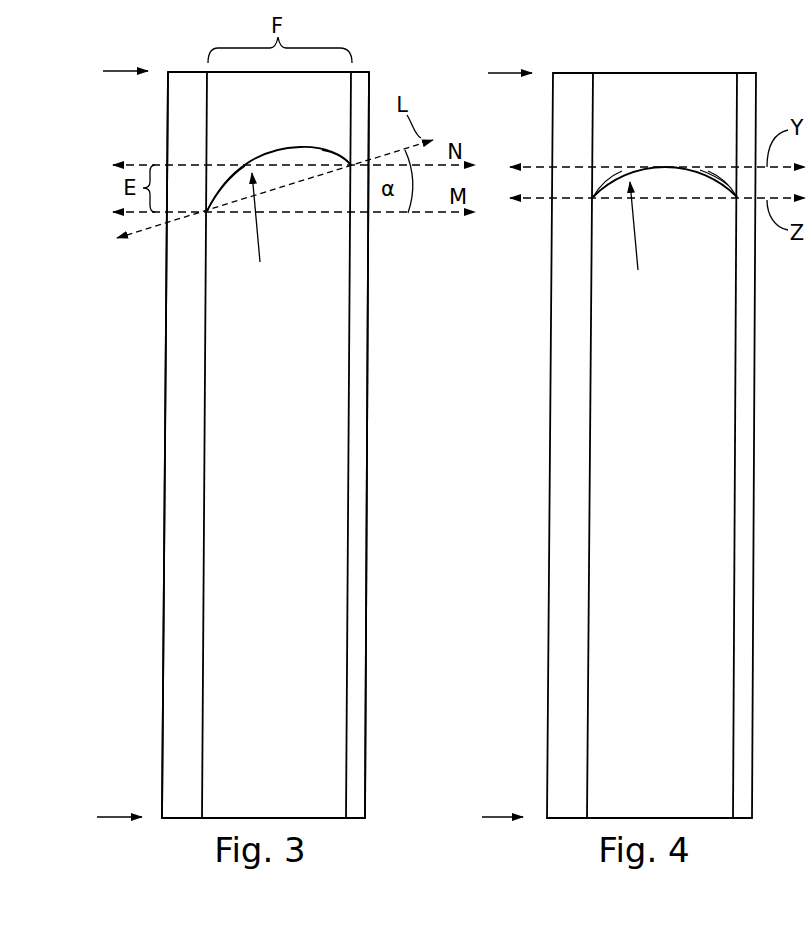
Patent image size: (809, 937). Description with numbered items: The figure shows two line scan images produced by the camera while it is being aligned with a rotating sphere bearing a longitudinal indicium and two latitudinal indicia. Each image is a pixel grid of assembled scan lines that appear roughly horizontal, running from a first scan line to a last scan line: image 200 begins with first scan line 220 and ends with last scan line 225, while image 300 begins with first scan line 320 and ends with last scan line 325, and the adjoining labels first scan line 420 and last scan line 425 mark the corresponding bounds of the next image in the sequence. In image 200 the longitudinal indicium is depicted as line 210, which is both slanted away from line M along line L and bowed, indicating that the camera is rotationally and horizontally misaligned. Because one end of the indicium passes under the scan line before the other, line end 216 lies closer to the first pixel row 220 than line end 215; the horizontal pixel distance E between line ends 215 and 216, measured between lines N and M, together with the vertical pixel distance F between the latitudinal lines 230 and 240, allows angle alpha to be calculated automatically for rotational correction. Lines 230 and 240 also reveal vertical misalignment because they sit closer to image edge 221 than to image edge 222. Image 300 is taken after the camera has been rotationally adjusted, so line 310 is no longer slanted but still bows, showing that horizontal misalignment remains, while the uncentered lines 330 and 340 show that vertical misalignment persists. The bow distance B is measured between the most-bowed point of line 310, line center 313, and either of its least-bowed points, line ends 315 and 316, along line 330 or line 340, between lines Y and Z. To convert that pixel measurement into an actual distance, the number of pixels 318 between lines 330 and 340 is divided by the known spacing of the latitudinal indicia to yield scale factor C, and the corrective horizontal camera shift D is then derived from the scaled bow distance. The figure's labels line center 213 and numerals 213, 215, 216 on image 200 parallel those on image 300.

In FIG. 3, the image 200 is at (246, 527).
In FIG. 3, the line representation of indicium 210 is at (260, 262).
In FIG. 3, the line center 213 is at (283, 152).
In FIG. 3, the line end 215 is at (207, 211).
In FIG. 3, the line end 216 is at (350, 167).
In FIG. 3, the first scan line 220 is at (98, 72).
In FIG. 3, the image edge 221 is at (366, 474).
In FIG. 3, the image edge 222 is at (165, 520).
In FIG. 3, the last scan line 225 is at (92, 817).
In FIG. 3, the line representation of latitudinal indicium 230 is at (203, 619).
In FIG. 3, the line representation of latitudinal indicium 240 is at (347, 558).
In FIG. 4, the image 300 is at (632, 529).
In FIG. 4, the line representation of indicium 310 is at (638, 270).
In FIG. 4, the line center 313 is at (667, 167).
In FIG. 4, the line end 315 is at (593, 197).
In FIG. 4, the line end 316 is at (737, 197).
In FIG. 4, the number of pixels 318 is at (728, 173).
In FIG. 4, the first scan line 320 is at (483, 72).
In FIG. 4, the last scan line 325 is at (474, 817).
In FIG. 4, the line representation of latitudinal indicium 330 is at (589, 619).
In FIG. 4, the line representation of latitudinal indicium 340 is at (733, 558).
In FIG. 4, the first scan line 420 is at (774, 72).
In FIG. 4, the last scan line 425 is at (772, 817).